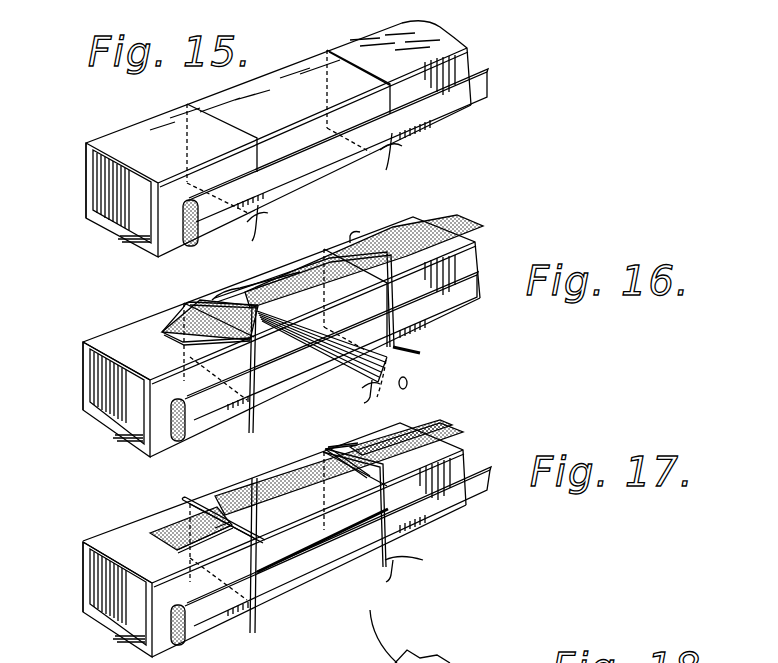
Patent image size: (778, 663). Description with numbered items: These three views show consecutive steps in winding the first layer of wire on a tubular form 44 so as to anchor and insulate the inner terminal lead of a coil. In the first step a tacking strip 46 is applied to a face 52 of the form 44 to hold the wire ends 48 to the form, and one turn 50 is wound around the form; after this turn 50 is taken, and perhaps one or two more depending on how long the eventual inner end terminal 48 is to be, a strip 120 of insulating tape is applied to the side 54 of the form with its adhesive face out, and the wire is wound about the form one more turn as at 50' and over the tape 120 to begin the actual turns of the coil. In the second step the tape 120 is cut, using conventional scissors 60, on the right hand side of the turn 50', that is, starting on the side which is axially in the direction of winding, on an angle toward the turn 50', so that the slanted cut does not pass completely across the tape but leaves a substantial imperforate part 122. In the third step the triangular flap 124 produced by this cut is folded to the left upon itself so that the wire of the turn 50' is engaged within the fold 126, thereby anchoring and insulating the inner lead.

In FIG. 15, the form 44 is at (86, 181).
In FIG. 16, the form 44 is at (117, 427).
In FIG. 17, the form 44 is at (115, 633).
In FIG. 15, the tacking strip 46 is at (337, 153).
In FIG. 16, the tacking strip 46 is at (447, 303).
In FIG. 17, the tacking strip 46 is at (315, 563).
In FIG. 15, the wire ends 48 is at (399, 151).
In FIG. 16, the wire ends 48 is at (367, 390).
In FIG. 17, the wire ends 48 is at (393, 570).
In FIG. 16, the turn 50 is at (220, 291).
In FIG. 16, the turn 50' is at (269, 255).
In FIG. 17, the turn 50' is at (273, 481).
In FIG. 15, the face 52 is at (278, 139).
In FIG. 16, the face 52 is at (281, 337).
In FIG. 17, the face 52 is at (274, 540).
In FIG. 16, the side 54 is at (118, 358).
In FIG. 17, the side 54 is at (117, 557).
In FIG. 16, the scissors 60 is at (397, 363).
In FIG. 16, the strip of insulating tape 120 is at (163, 332).
In FIG. 17, the strip of insulating tape 120 is at (167, 530).
In FIG. 17, the imperforate part 122 is at (221, 528).
In FIG. 16, the triangular flap 124 is at (248, 292).
In FIG. 17, the triangular flap 124 is at (415, 520).
In FIG. 17, the fold 126 is at (262, 534).